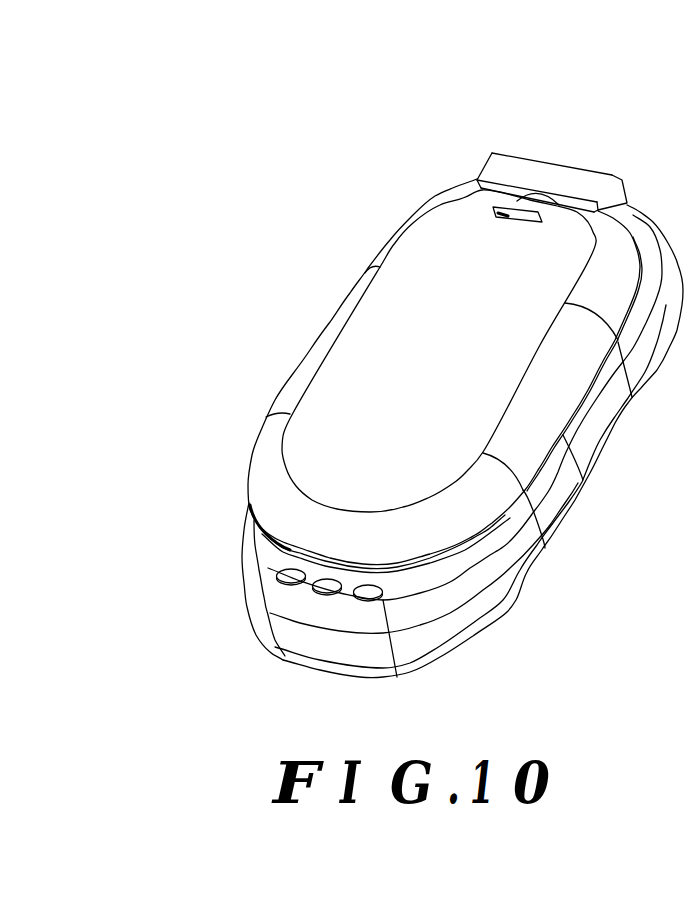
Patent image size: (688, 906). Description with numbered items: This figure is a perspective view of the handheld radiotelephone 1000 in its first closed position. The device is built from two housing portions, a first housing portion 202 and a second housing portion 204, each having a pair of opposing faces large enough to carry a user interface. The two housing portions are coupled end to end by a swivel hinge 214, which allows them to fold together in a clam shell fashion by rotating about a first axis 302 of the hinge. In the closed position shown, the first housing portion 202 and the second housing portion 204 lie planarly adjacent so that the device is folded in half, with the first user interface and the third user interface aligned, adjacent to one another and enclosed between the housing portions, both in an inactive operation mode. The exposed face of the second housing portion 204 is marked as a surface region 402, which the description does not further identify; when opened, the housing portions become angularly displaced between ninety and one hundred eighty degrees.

The mobile communication device 1000 is at (622, 128).
The swivel hinge 214 is at (548, 182).
The second housing portion 204 is at (348, 296).
The display panel 402 is at (481, 333).
The first axis 302 is at (269, 542).
The first housing portion 202 is at (480, 631).